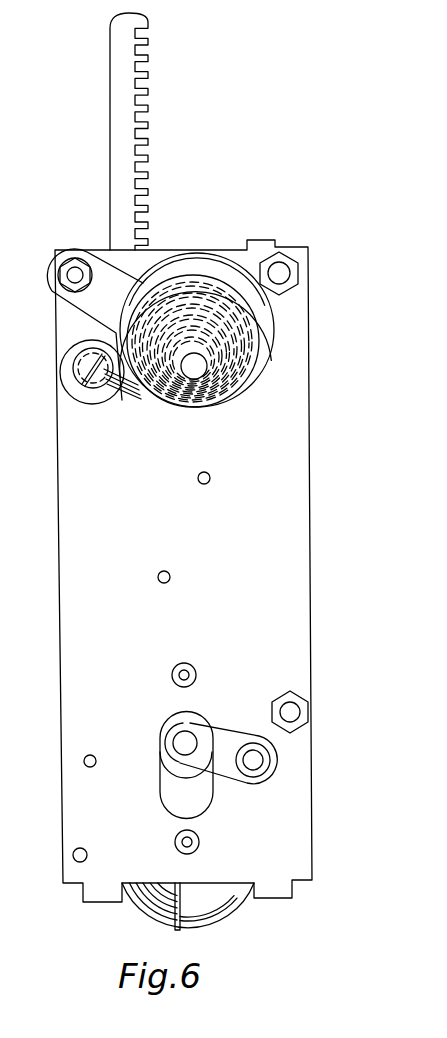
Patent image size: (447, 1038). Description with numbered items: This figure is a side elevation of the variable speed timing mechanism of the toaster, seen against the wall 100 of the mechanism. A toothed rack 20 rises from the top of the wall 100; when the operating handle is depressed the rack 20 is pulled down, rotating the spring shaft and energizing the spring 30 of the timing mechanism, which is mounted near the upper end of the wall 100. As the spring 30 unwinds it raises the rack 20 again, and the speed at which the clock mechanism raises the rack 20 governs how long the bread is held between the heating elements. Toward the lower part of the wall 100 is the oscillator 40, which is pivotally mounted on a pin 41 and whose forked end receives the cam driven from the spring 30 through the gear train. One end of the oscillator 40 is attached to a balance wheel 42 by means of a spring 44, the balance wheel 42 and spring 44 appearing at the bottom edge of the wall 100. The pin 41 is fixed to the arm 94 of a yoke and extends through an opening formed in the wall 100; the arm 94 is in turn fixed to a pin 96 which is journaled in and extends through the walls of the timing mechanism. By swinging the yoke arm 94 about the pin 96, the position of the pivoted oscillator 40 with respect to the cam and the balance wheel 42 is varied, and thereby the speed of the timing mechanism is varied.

The rack 20 is at (110, 126).
The spring 30 is at (273, 342).
The oscillator 40 is at (172, 726).
The pin 41 is at (182, 748).
The balance wheel 42 is at (222, 912).
The spring 44 is at (160, 922).
The arm 94 is at (227, 740).
The pin 96 is at (263, 760).
The wall 100 is at (306, 658).